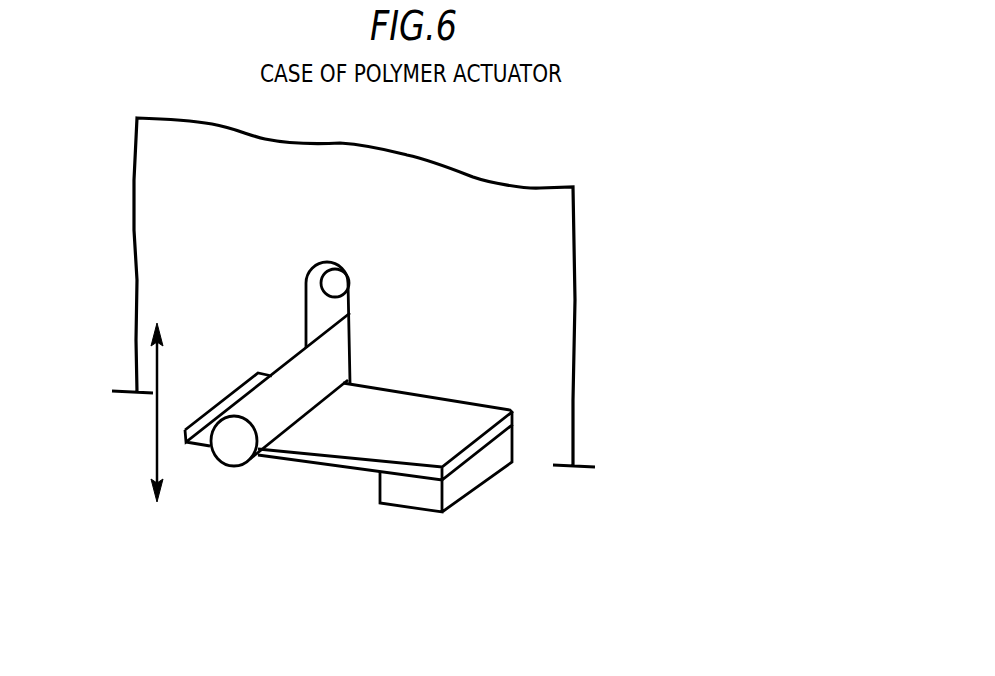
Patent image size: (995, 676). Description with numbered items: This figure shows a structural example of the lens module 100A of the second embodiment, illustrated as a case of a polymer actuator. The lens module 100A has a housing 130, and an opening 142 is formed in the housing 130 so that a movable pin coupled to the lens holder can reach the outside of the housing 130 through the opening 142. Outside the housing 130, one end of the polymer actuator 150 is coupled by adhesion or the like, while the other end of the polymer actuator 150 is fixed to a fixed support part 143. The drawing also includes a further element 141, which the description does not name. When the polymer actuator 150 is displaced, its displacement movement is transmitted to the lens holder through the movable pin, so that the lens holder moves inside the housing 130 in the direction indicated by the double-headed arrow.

The lens module 100A is at (665, 196).
The housing 130 is at (543, 307).
The polymer actuator element 141 is at (262, 410).
The opening 142 is at (350, 290).
The fixed support part 143 is at (477, 466).
The polymer actuator 150 is at (315, 455).